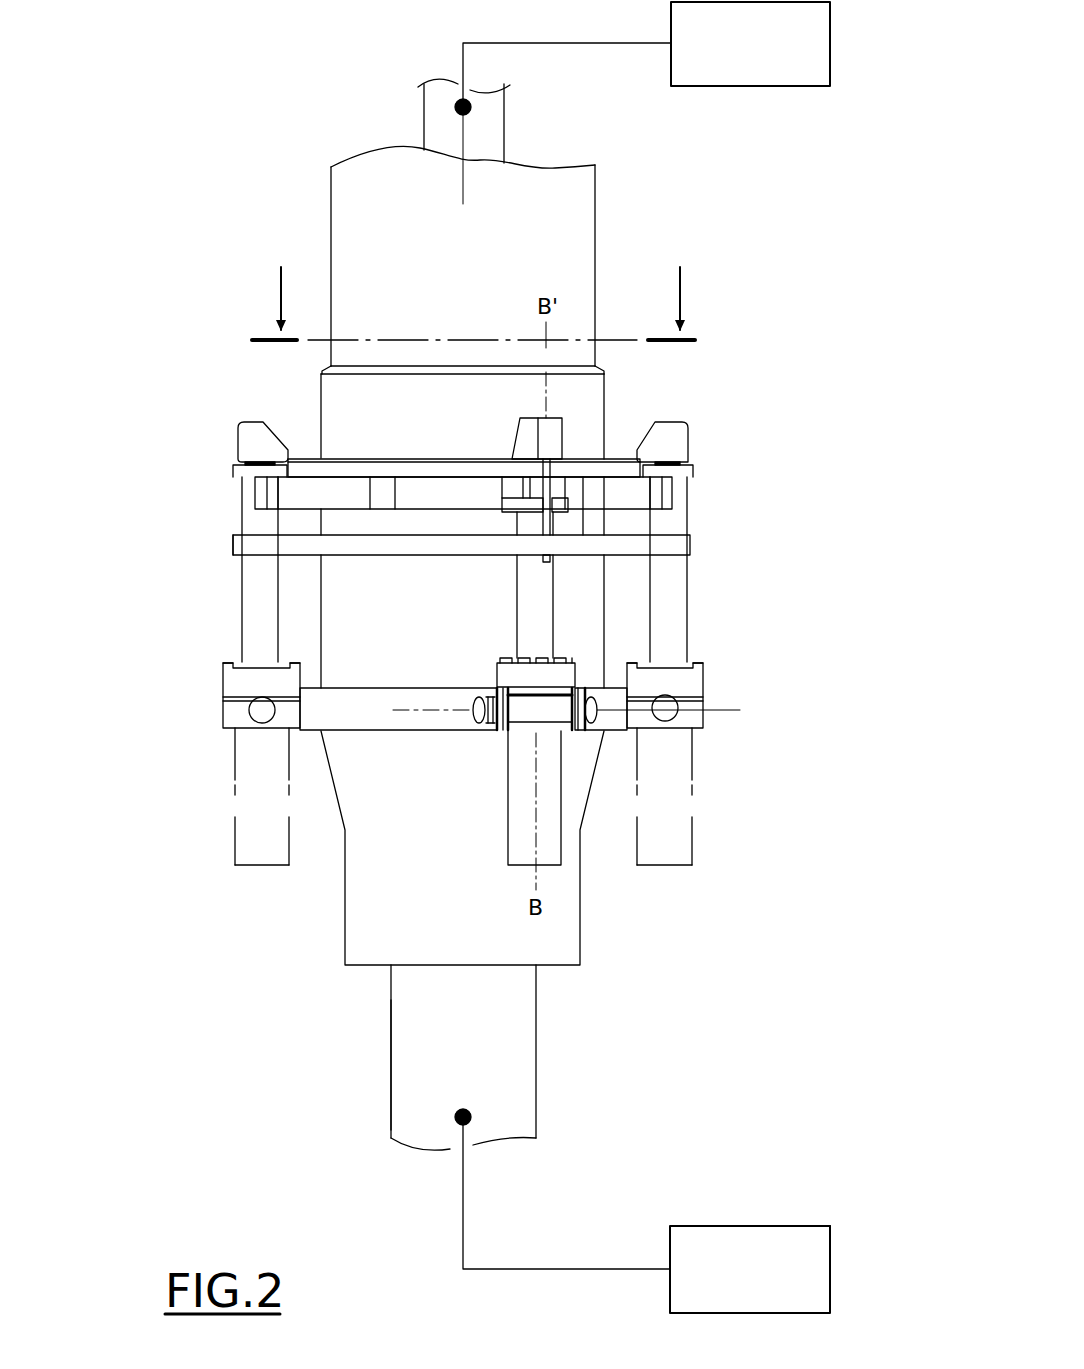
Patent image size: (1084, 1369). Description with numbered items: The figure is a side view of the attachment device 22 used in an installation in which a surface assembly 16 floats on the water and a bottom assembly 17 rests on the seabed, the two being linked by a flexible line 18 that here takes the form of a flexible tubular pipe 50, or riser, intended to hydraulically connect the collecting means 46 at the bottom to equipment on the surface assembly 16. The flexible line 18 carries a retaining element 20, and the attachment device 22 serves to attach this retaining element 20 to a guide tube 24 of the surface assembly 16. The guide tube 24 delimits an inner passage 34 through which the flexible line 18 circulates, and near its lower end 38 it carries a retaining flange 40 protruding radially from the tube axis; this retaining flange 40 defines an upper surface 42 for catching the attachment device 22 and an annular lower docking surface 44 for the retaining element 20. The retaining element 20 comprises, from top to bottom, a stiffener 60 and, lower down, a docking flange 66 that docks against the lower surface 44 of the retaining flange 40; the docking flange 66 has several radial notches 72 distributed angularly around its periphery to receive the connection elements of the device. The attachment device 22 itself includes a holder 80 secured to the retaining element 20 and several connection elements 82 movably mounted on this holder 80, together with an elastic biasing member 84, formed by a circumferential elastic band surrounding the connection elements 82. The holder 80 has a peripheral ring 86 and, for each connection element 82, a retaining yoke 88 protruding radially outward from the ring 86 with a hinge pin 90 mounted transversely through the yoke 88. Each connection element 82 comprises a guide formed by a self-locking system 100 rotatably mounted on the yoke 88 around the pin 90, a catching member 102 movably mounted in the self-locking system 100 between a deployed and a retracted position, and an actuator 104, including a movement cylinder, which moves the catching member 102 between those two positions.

The surface assembly 16 is at (762, 52).
The bottom assembly 17 is at (851, 1283).
The flexible line 18 is at (386, 1067).
The retaining element 20 is at (215, 817).
The attachment device 22 is at (758, 515).
The guide tube 24 is at (298, 357).
The inner passage 34 is at (368, 126).
The lower end 38 is at (205, 494).
The retaining flange 40 is at (620, 471).
The upper surface 42 is at (636, 460).
The annular lower docking surface 44 is at (587, 493).
The collecting means 46 is at (774, 1259).
The flexible tubular pipe 50 is at (537, 1083).
The stiffener 60 is at (568, 947).
The docking flange 66 is at (627, 498).
The radial notches 72 is at (385, 494).
The holder 80 is at (637, 684).
The connection elements 82 is at (580, 608).
The elastic biasing member 84 is at (258, 548).
The peripheral ring 86 is at (428, 733).
The retaining yoke 88 is at (477, 734).
The hinge pin 90 is at (597, 712).
The self-locking system 100 is at (532, 600).
The catching member 102 is at (563, 413).
The actuator 104 is at (516, 846).